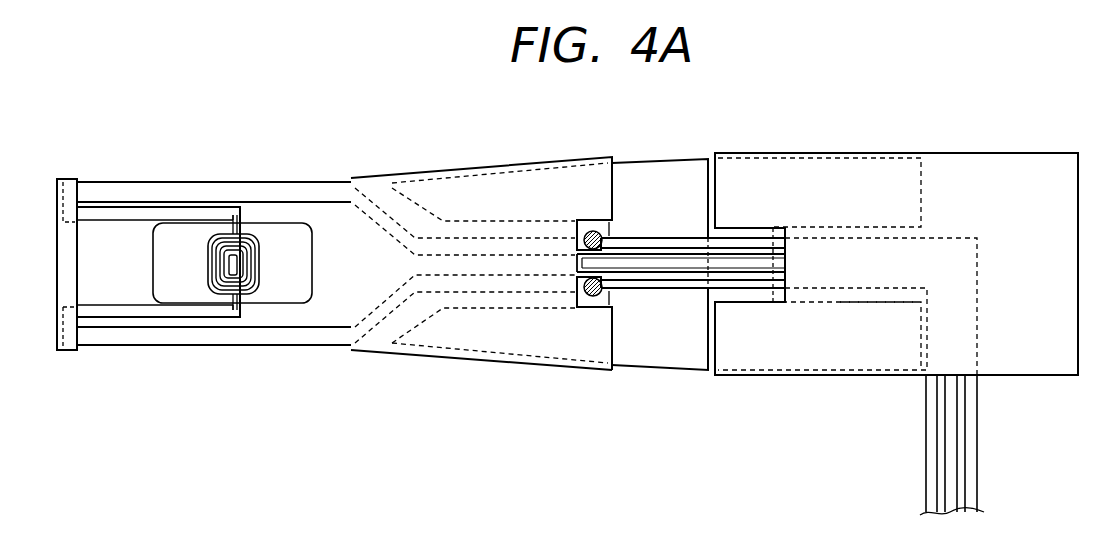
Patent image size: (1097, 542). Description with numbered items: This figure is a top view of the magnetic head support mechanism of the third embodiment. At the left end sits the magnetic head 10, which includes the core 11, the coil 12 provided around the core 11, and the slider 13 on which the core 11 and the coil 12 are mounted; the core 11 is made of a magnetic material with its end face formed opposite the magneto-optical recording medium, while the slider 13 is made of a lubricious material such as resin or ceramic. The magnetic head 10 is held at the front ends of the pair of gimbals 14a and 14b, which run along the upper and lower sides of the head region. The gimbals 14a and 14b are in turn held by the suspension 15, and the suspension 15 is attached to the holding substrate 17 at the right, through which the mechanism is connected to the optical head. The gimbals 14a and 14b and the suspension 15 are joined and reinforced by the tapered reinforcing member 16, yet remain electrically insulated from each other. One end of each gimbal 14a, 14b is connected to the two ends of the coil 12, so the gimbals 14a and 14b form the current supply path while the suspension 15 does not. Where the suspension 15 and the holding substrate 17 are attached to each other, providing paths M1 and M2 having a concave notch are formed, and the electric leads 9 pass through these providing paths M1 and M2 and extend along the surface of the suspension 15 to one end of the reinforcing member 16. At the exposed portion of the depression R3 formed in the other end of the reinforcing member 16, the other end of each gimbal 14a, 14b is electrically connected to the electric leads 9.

The electric leads 9 is at (679, 283).
The magnetic head 10 is at (199, 326).
The core 11 is at (216, 292).
The coil 12 is at (210, 260).
The slider 13 is at (162, 280).
The gimbal 14a is at (308, 333).
The gimbal 14b is at (313, 190).
The suspension 15 is at (675, 180).
The reinforcing member 16 is at (492, 333).
The holding substrate 17 is at (1028, 178).
The depression R3 is at (593, 228).
The providing path M1 is at (759, 296).
The providing path M2 is at (858, 297).